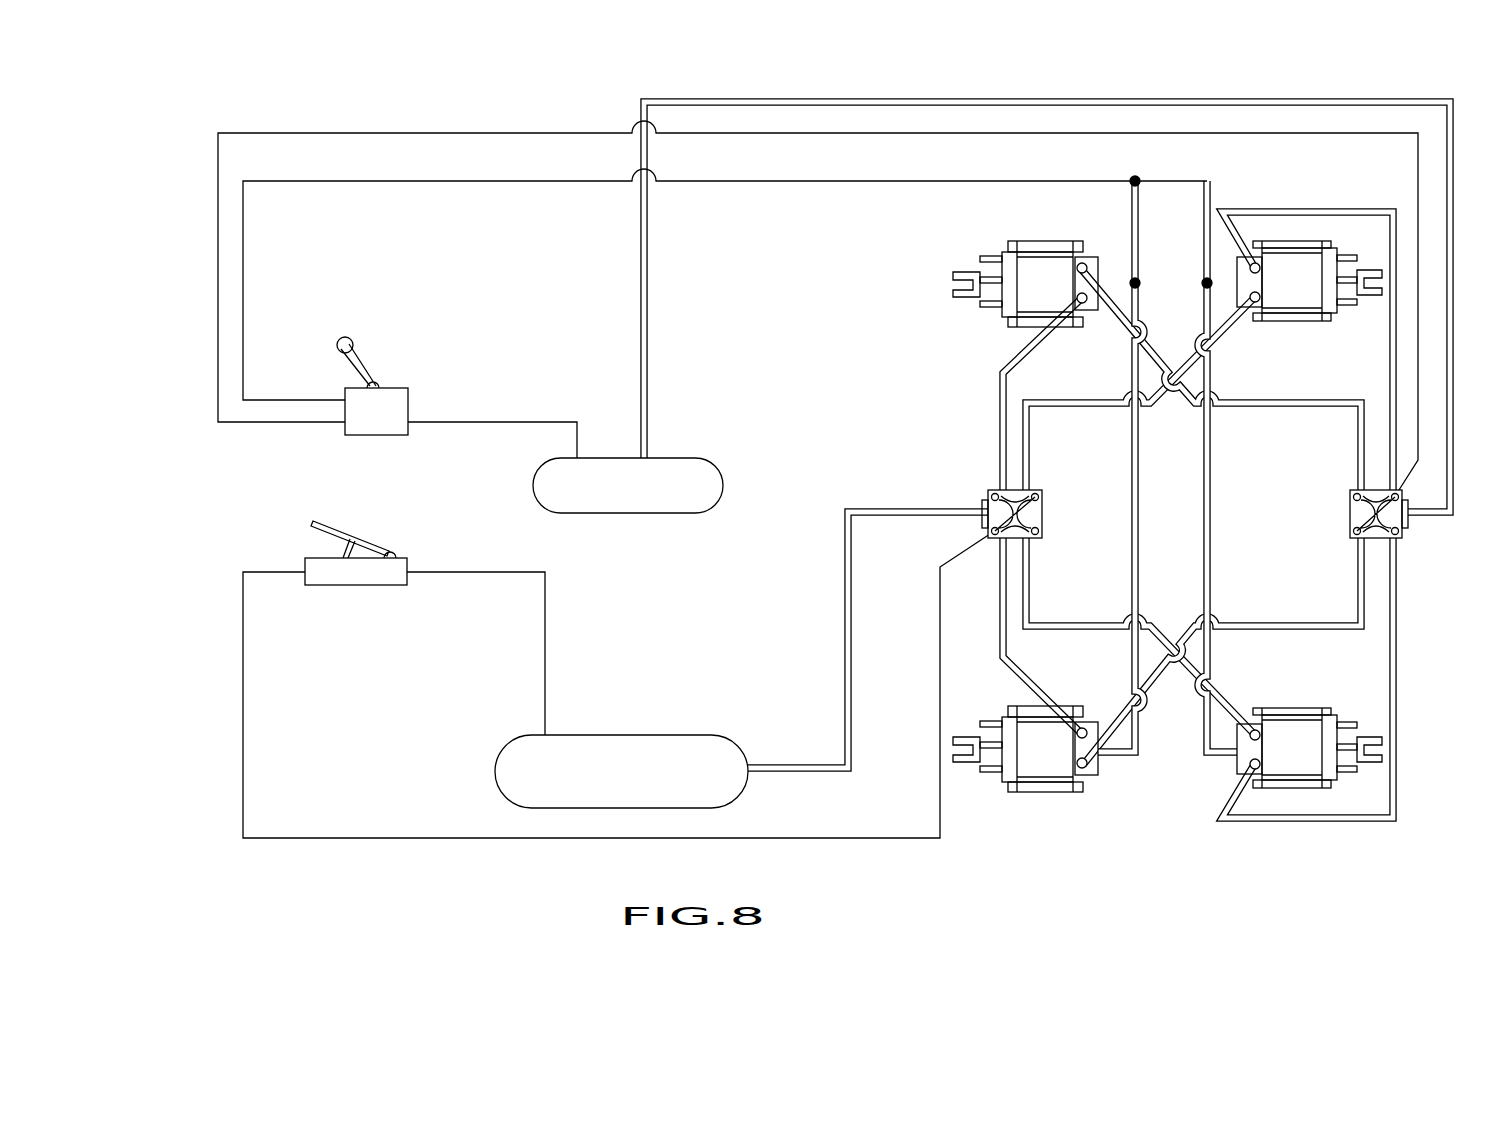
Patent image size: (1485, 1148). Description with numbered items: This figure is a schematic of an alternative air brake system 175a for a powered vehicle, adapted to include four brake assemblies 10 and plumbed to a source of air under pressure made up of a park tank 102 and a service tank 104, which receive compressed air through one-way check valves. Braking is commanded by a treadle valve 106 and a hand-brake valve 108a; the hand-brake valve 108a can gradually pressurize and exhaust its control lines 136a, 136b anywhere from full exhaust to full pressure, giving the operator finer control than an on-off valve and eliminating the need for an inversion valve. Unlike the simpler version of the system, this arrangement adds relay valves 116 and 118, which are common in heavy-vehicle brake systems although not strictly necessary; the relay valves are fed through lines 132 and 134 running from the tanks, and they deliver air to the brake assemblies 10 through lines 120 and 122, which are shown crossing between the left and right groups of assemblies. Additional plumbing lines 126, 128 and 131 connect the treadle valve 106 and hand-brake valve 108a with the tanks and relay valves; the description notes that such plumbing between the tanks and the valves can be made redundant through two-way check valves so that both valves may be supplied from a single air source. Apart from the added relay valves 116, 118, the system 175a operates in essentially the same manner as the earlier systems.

The brake assembly 10 is at (1051, 298).
The park tank 102 is at (645, 503).
The service tank 104 is at (645, 788).
The treadle valve 106 is at (391, 557).
The hand-brake valve 108a is at (408, 391).
The relay valve 116 is at (987, 492).
The relay valve 118 is at (1348, 515).
The line 120 is at (1389, 373).
The line 122 is at (997, 467).
The line 126 is at (577, 420).
The line 128 is at (546, 662).
The line 131 is at (244, 690).
The line 132 is at (845, 691).
The line 134 is at (886, 101).
The line 136a is at (670, 135).
The line 136b is at (828, 182).
The air brake system 175a is at (431, 117).